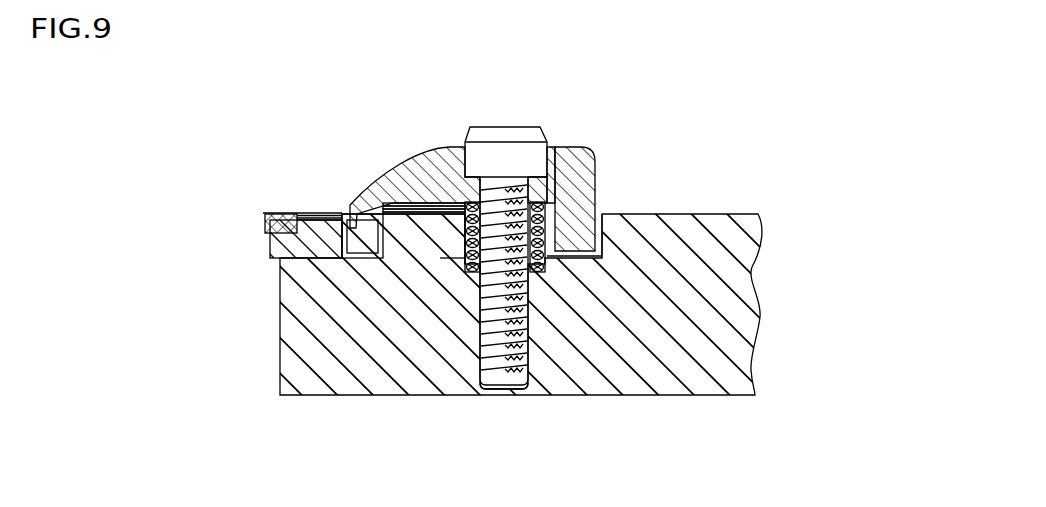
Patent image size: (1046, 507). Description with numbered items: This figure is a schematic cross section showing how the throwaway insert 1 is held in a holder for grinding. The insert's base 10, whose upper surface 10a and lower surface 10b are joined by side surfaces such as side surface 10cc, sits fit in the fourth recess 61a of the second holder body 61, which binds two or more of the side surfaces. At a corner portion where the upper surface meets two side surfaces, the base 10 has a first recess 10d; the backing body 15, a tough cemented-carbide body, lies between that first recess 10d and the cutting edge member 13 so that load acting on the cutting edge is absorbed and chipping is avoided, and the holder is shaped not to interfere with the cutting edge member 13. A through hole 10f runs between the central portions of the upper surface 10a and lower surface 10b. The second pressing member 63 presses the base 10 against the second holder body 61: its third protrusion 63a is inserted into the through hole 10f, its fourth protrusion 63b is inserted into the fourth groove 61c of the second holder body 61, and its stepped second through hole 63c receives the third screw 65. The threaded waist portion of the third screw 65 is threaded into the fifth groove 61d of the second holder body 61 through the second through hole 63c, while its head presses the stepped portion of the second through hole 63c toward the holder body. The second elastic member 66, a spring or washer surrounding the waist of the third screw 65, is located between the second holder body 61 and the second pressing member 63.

The throwaway insert 1 is at (158, 155).
The base 10 is at (200, 108).
The through hole 10f is at (356, 212).
The upper surface 10a is at (333, 210).
The lower surface 10b is at (310, 214).
The first recess 10d is at (305, 210).
The side surface 10cc is at (447, 257).
The cutting edge member 13 is at (263, 217).
The backing body 15 is at (263, 228).
The second pressing member 63 is at (622, 56).
The third protrusion 63a is at (373, 200).
The fourth protrusion 63b is at (603, 150).
The second through hole 63c is at (566, 146).
The second holder body 61 is at (660, 356).
The fourth recess 61a is at (458, 262).
The fourth groove 61c is at (568, 258).
The fifth groove 61d is at (508, 388).
The third screw 65 is at (494, 328).
The second elastic member 66 is at (468, 262).